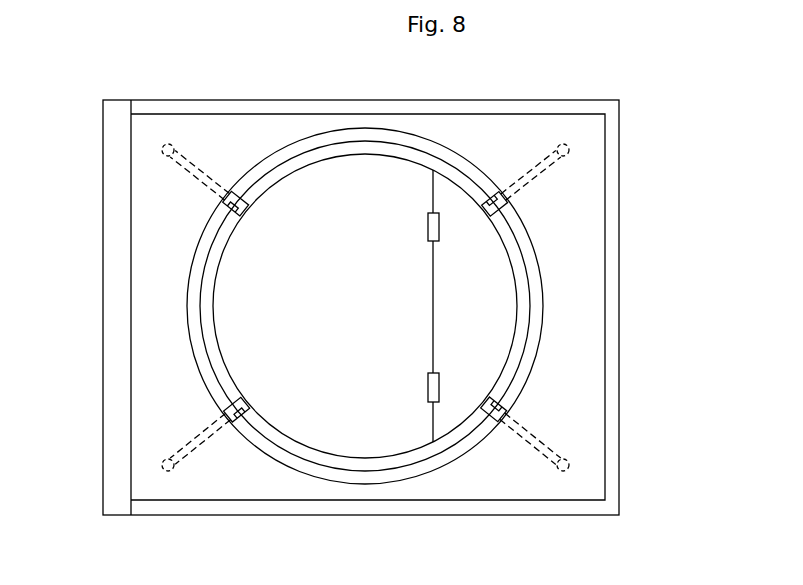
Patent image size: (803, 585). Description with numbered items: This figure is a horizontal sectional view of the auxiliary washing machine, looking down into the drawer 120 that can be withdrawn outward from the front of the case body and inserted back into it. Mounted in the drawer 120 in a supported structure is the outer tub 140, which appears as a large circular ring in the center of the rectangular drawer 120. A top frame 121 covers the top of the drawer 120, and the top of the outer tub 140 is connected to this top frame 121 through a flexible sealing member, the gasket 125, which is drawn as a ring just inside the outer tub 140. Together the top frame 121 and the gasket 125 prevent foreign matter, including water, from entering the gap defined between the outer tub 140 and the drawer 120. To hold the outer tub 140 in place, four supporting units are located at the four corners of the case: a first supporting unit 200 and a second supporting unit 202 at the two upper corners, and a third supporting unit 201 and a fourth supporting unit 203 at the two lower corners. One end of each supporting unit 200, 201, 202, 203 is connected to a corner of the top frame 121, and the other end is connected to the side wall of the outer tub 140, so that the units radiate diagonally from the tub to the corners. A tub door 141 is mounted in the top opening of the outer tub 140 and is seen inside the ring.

The drawer 120 is at (96, 421).
The top frame 121 is at (160, 367).
The gasket 125 is at (210, 317).
The outer tub 140 is at (198, 262).
The tub door 141 is at (363, 172).
The first supporting unit 200 is at (200, 168).
The third supporting unit 201 is at (200, 447).
The second supporting unit 202 is at (533, 168).
The fourth supporting unit 203 is at (533, 445).